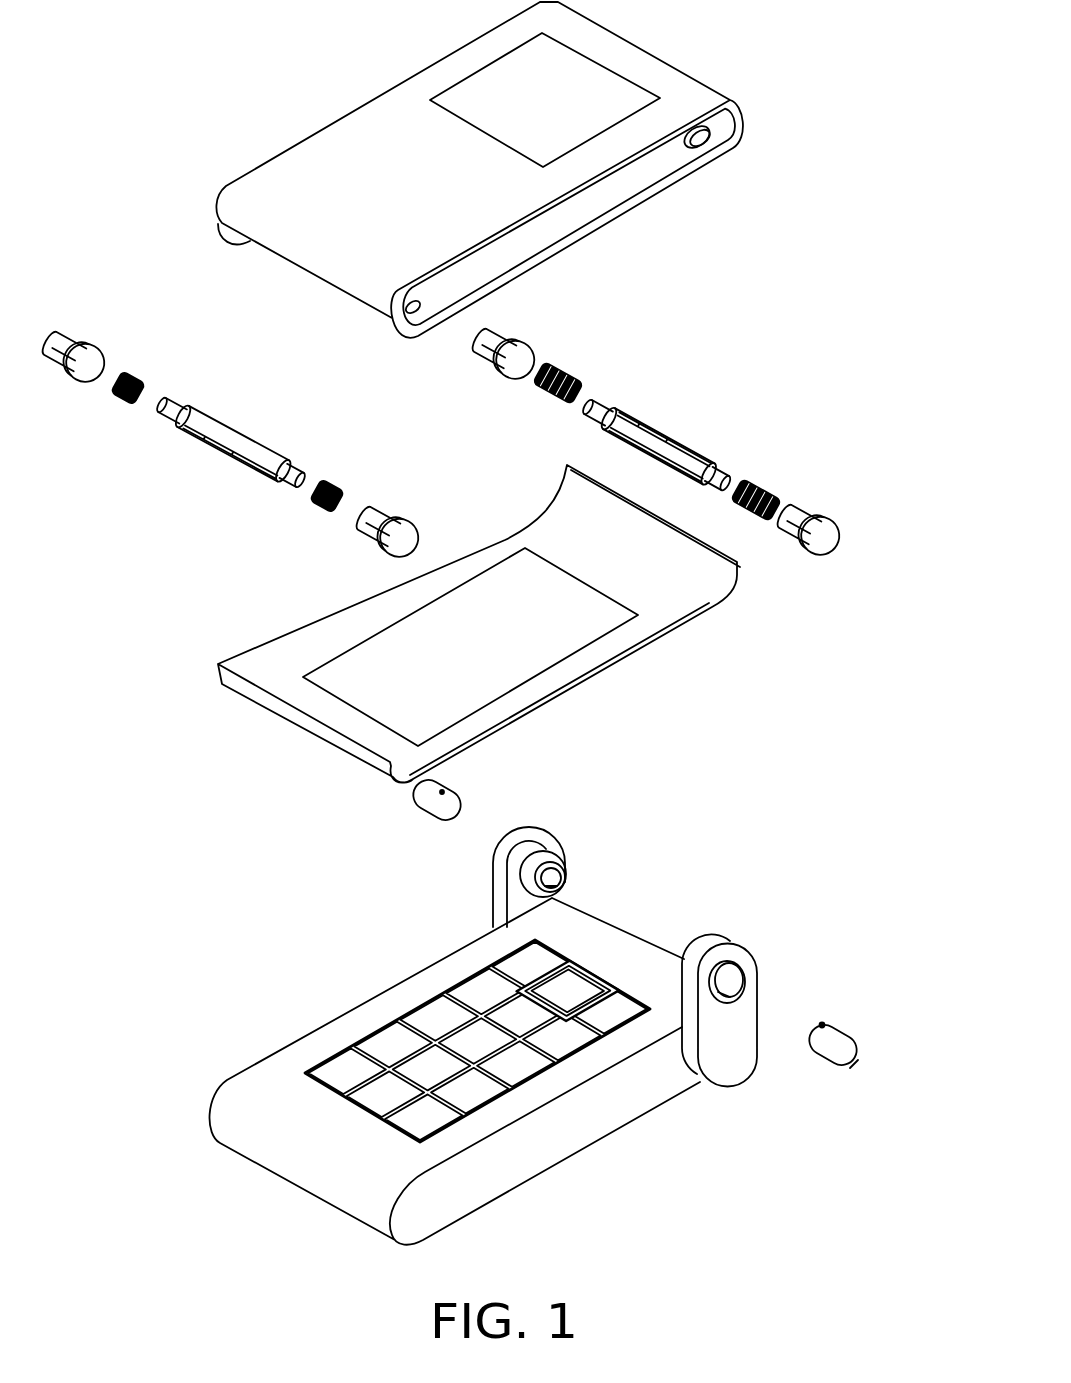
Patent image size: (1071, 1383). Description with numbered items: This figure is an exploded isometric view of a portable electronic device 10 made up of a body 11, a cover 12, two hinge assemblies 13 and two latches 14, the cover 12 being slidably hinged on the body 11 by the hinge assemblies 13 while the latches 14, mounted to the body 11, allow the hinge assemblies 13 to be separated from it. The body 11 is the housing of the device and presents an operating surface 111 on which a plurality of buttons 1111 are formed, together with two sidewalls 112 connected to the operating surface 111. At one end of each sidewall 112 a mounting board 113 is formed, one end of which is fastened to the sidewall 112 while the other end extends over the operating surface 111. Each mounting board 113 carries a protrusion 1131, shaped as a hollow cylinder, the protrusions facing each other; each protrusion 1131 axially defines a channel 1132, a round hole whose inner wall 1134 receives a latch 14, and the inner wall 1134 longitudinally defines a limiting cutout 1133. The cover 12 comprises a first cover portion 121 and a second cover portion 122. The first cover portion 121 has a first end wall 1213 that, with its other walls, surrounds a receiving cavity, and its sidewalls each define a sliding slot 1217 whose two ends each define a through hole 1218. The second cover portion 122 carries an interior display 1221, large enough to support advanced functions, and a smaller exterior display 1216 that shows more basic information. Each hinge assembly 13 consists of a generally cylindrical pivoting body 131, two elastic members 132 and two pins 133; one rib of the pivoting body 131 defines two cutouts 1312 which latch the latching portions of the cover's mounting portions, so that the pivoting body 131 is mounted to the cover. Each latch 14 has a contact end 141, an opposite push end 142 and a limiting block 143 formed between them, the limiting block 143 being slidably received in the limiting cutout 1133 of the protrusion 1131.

The portable electronic device 10 is at (186, 34).
The body 11 is at (518, 1016).
The operating surface 111 is at (423, 1041).
The buttons 1111 is at (358, 1027).
The sidewall 112 is at (572, 1123).
The mounting board 113 is at (738, 1013).
The protrusion 1131 is at (593, 857).
The channel 1132 is at (553, 881).
The limiting cutout 1133 is at (562, 890).
The inner wall 1134 is at (546, 882).
The cover 12 is at (490, 392).
The first cover portion 121 is at (492, 212).
The exterior display 1216 is at (485, 100).
The sliding slot 1217 is at (552, 223).
The through hole 1218 is at (693, 137).
The second cover portion 122 is at (476, 616).
The interior display 1221 is at (390, 665).
The hinge assembly 13 is at (445, 442).
The pivoting body 131 is at (213, 415).
The cutouts 1312 is at (205, 440).
The first end wall 1213 is at (277, 487).
The elastic member 132 is at (135, 372).
The pin 133 is at (83, 352).
The latch 14 is at (842, 1052).
The contact end 141 is at (855, 1060).
The push end 142 is at (805, 1040).
The limiting block 143 is at (822, 1023).